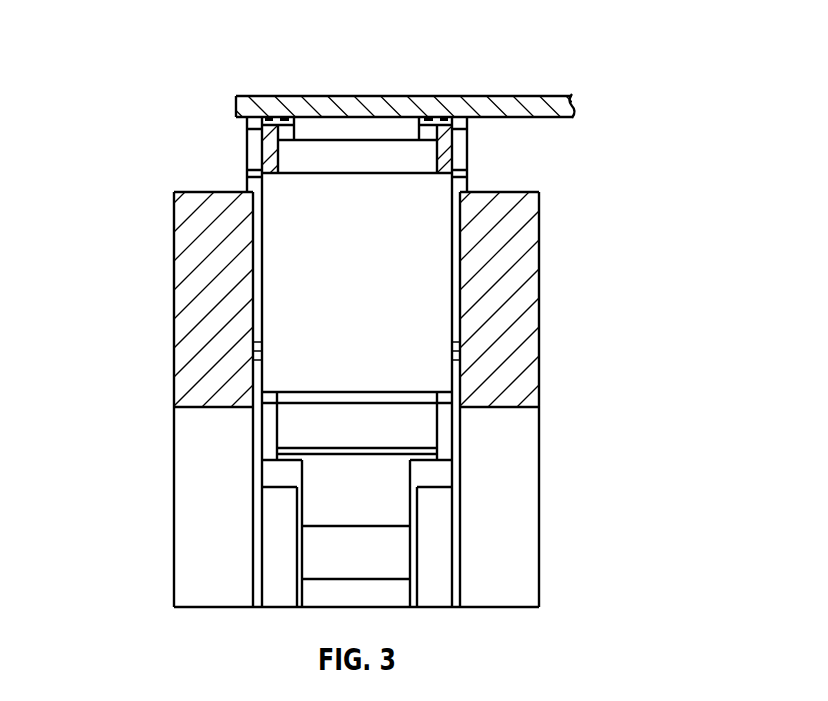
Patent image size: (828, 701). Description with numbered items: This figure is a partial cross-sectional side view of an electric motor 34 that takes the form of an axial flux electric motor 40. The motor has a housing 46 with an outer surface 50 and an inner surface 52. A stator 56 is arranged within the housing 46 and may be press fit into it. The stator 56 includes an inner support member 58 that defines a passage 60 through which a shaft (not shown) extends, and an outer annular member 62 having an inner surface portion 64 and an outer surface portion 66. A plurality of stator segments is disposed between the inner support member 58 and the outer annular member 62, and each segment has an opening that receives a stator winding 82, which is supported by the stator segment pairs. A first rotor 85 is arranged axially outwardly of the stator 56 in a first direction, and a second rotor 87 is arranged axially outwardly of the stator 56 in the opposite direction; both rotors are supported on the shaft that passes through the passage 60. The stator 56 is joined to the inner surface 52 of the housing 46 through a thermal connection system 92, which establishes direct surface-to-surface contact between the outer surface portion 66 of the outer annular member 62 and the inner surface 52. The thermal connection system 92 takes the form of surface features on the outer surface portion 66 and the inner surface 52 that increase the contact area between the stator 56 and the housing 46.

The electric motor 34 is at (536, 620).
The axial flux electric motor 40 is at (578, 280).
The housing 46 is at (247, 88).
The outer surface 50 is at (532, 95).
The inner surface 52 is at (537, 118).
The stator 56 is at (228, 138).
The inner support member 58 is at (427, 433).
The passage 60 is at (520, 527).
The outer annular member 62 is at (413, 117).
The inner surface portion 64 is at (458, 130).
The outer surface portion 66 is at (458, 117).
The stator winding 82 is at (374, 290).
The first rotor 85 is at (184, 336).
The second rotor 87 is at (513, 252).
The thermal connection system 92 is at (311, 121).